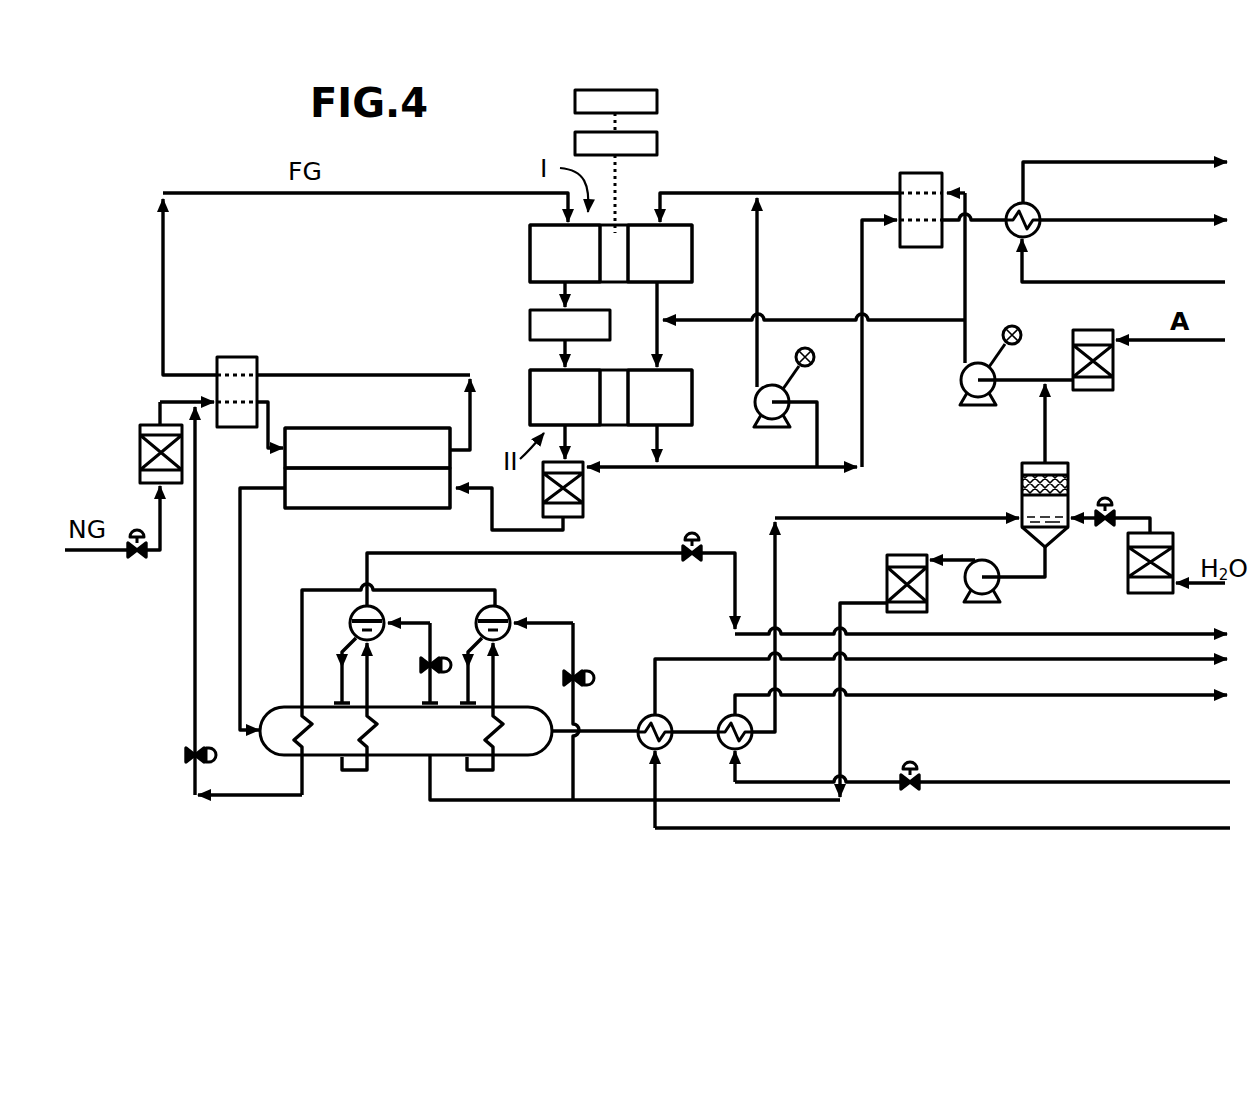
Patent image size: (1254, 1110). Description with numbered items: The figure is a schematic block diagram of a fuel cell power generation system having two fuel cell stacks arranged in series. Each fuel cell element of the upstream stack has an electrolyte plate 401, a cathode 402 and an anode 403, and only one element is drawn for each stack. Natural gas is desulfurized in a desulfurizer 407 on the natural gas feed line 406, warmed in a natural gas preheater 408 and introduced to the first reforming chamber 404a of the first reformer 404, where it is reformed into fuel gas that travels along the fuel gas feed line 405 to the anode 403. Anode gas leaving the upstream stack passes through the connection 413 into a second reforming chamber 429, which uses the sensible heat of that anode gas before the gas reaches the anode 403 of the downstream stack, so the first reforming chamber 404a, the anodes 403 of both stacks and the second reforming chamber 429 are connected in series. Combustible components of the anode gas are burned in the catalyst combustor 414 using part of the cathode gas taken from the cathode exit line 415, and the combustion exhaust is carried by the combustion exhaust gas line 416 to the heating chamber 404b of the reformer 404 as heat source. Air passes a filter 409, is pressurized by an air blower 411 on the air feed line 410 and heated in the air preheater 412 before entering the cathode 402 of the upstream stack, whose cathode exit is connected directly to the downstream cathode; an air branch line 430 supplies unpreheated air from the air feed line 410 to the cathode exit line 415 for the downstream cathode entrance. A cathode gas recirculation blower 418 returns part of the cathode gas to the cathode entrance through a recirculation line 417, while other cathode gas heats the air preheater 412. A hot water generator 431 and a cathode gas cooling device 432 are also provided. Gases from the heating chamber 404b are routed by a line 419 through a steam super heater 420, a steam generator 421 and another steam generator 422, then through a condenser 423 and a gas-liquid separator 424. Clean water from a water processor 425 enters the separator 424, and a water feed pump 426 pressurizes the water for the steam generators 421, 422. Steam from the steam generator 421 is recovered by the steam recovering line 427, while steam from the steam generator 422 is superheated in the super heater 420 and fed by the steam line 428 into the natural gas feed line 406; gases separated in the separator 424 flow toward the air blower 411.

The electrolyte plate 401 is at (616, 232).
The cathode 402 is at (650, 274).
The anode 403 is at (555, 274).
The first reformer 404 is at (331, 472).
The first reforming chamber 404a is at (415, 404).
The heating chamber 404b is at (357, 495).
The fuel gas feed line 405 is at (238, 168).
The natural gas feed line 406 is at (170, 402).
The desulfurizer 407 is at (140, 478).
The natural gas preheater 408 is at (280, 343).
The filter 409 is at (1114, 386).
The air feed line 410 is at (960, 282).
The air blower 411 is at (978, 400).
The air preheater 412 is at (900, 190).
The reformed gas passage 413 is at (560, 290).
The catalyst combustor 414 is at (584, 505).
The cathode exit line 415 is at (660, 292).
The combustion exhaust gas line 416 is at (492, 512).
The recirculation line 417 is at (760, 258).
The cathode gas recirculation blower 418 is at (758, 400).
The line 419 is at (237, 668).
The steam super heater 420 is at (308, 733).
The steam generator 421 is at (378, 733).
The steam generator 422 is at (510, 735).
The condenser 423 is at (647, 716).
The gas-liquid separator 424 is at (1062, 506).
The water processor 425 is at (1173, 538).
The water feed pump 426 is at (1000, 580).
The steam recovering line 427 is at (620, 556).
The steam line 428 is at (195, 622).
The second reforming chamber 429 is at (533, 337).
The air branch line 430 is at (930, 323).
The hot water generator 431 is at (750, 737).
The cathode gas cooling device 432 is at (1007, 202).